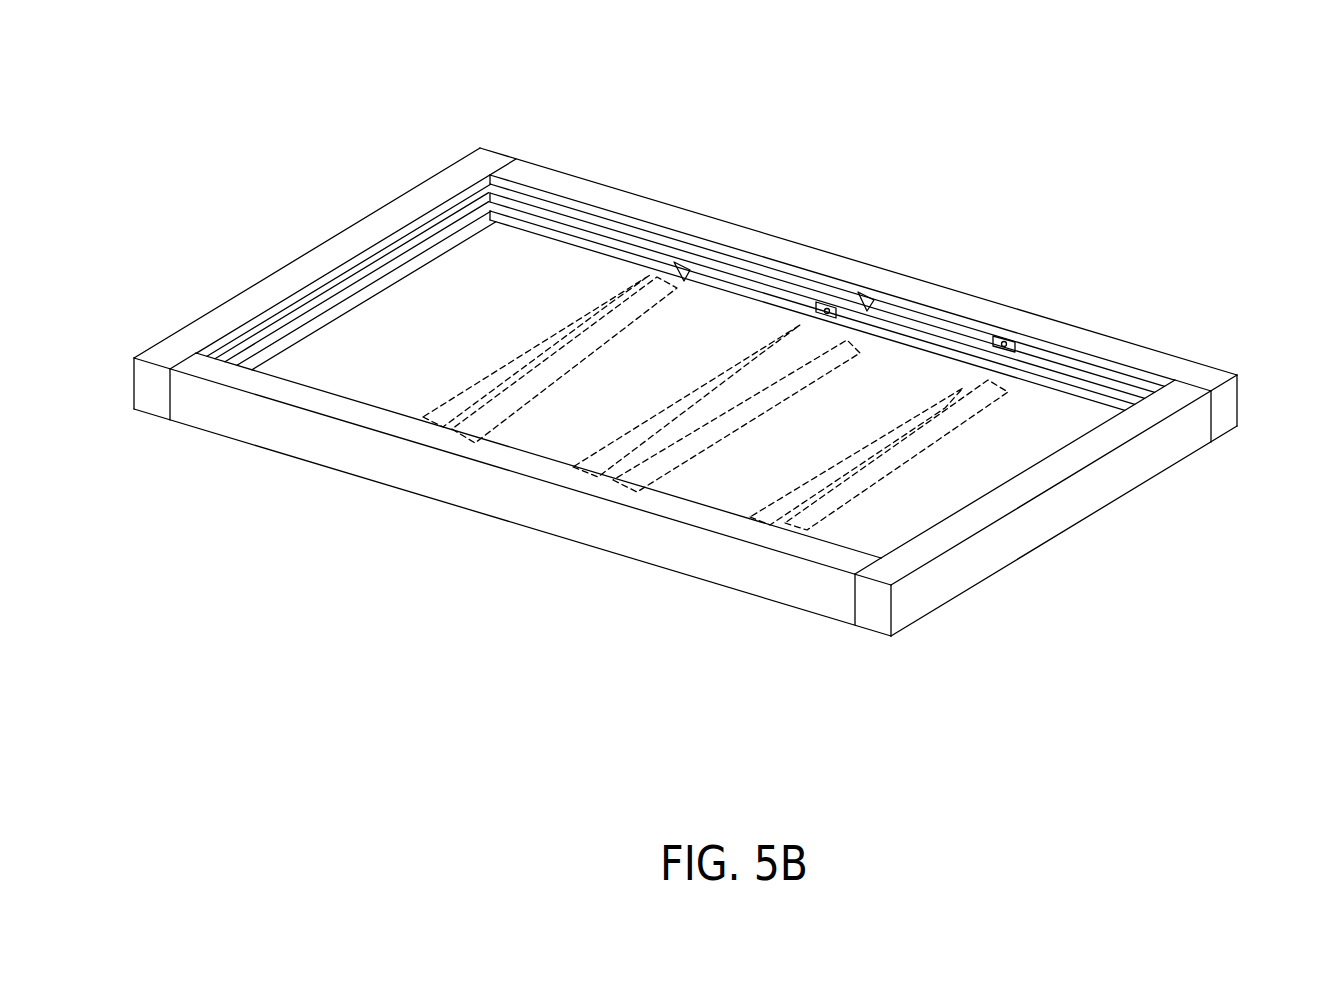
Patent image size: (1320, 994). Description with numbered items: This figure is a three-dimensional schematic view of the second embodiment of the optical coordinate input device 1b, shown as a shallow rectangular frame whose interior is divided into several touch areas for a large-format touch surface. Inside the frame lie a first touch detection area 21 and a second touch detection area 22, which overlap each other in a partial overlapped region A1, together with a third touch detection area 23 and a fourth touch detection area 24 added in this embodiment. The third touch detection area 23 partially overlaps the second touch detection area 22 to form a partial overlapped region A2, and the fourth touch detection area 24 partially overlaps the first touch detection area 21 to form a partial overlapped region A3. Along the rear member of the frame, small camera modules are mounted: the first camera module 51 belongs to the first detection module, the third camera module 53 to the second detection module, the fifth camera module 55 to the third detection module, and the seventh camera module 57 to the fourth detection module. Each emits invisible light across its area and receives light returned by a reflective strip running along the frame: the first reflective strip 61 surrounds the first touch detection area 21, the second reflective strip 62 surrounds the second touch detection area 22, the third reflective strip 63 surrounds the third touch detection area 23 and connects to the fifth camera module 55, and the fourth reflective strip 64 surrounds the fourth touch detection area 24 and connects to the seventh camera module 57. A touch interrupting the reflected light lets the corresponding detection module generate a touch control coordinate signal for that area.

The optical coordinate input device 1b is at (1190, 107).
The first touch detection area 21 is at (713, 482).
The second touch detection area 22 is at (504, 420).
The third touch detection area 23 is at (322, 373).
The fourth touch detection area 24 is at (839, 537).
The first camera module 51 is at (818, 314).
The third camera module 53 is at (872, 297).
The fifth camera module 55 is at (670, 275).
The seventh camera module 57 is at (1012, 343).
The first reflective strip 61 is at (898, 334).
The second reflective strip 62 is at (744, 266).
The third reflective strip 63 is at (544, 228).
The fourth reflective strip 64 is at (1079, 366).
The partial overlapped region A1 is at (753, 390).
The partial overlapped region A2 is at (557, 360).
The partial overlapped region A3 is at (917, 446).